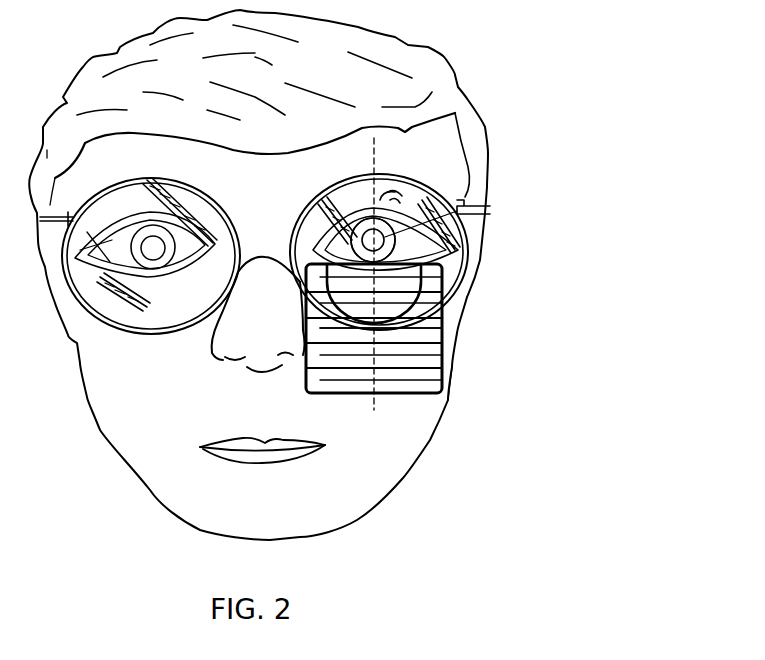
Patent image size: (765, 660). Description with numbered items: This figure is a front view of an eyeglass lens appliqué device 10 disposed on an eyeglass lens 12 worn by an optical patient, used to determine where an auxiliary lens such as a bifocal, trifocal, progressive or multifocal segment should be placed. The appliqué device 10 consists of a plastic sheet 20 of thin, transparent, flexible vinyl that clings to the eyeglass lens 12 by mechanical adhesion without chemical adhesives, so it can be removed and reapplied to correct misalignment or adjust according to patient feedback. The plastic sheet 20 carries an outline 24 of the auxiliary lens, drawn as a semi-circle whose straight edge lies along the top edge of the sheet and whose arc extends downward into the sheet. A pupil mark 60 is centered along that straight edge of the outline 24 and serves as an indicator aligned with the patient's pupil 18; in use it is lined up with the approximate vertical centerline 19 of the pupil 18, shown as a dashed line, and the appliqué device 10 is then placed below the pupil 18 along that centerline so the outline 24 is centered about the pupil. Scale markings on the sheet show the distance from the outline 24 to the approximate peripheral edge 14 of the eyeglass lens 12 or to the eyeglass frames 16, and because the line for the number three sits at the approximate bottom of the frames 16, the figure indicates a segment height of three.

The eyeglass lens appliqué device 10 is at (468, 395).
The eyeglass lens 12 is at (425, 188).
The peripheral edge of the eyeglass lens 14 is at (387, 327).
The eyeglass frames 16 is at (395, 192).
The pupil 18 is at (490, 210).
The vertical centerline of the pupil 19 is at (382, 143).
The plastic sheet 20 is at (408, 393).
The outline of auxiliary lens 24 is at (421, 275).
The pupil mark 60 is at (436, 255).